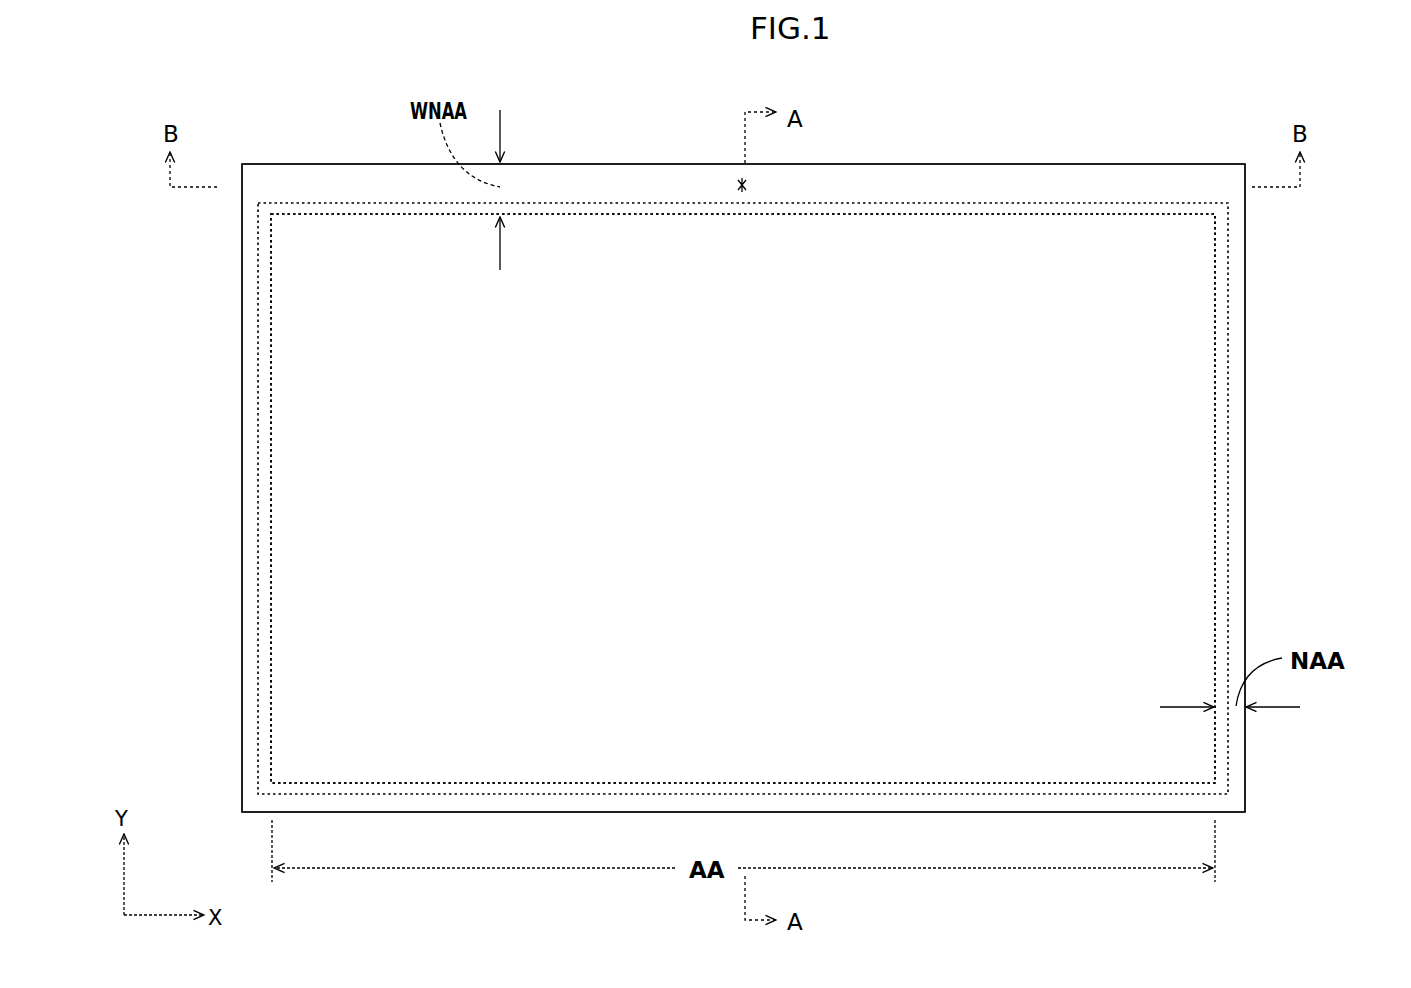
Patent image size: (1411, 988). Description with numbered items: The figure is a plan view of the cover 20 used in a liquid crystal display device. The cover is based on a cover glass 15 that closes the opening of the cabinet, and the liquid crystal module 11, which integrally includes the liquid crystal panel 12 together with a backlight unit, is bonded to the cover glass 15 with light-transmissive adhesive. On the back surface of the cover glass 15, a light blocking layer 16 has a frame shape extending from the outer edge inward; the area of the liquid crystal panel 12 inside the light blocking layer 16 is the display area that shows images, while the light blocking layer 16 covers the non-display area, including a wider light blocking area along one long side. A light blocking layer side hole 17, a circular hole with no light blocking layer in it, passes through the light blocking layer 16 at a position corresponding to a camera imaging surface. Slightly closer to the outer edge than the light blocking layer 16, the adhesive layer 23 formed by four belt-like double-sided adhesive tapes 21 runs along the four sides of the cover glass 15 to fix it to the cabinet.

The cover 20 is at (931, 128).
The light blocking layer side hole 17 is at (740, 164).
The light blocking layer 16 is at (1164, 201).
The adhesive layer 23 is at (832, 498).
The double-sided adhesive tape 21 is at (1234, 243).
The cover glass 15 is at (1145, 350).
The liquid crystal panel 12 is at (812, 488).
The liquid crystal module 11 is at (1135, 446).